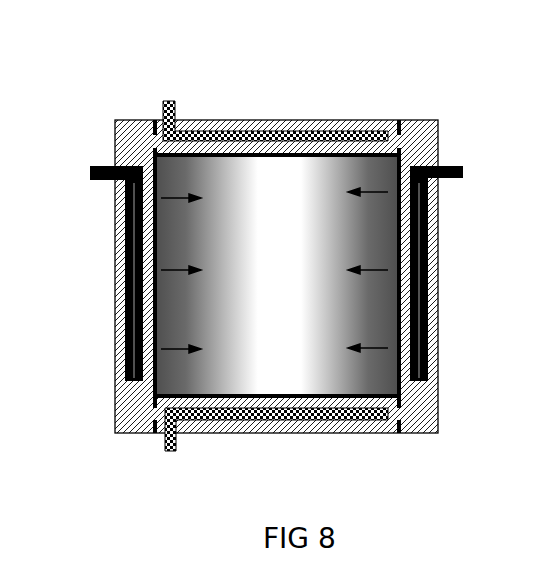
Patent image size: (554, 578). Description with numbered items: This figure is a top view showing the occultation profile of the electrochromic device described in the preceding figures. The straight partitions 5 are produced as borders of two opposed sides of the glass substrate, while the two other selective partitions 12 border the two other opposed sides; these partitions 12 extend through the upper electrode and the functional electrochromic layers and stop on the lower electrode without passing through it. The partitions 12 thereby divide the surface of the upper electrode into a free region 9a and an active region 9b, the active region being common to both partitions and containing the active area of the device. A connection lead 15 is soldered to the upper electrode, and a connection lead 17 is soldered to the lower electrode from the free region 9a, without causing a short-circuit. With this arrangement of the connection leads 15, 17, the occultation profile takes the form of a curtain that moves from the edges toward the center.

The straight partition 5 is at (130, 425).
The free region 9a is at (109, 128).
The active region 9b is at (428, 287).
The selective partition 12 is at (431, 146).
The connection lead 15 is at (420, 220).
The connection lead 17 is at (265, 124).